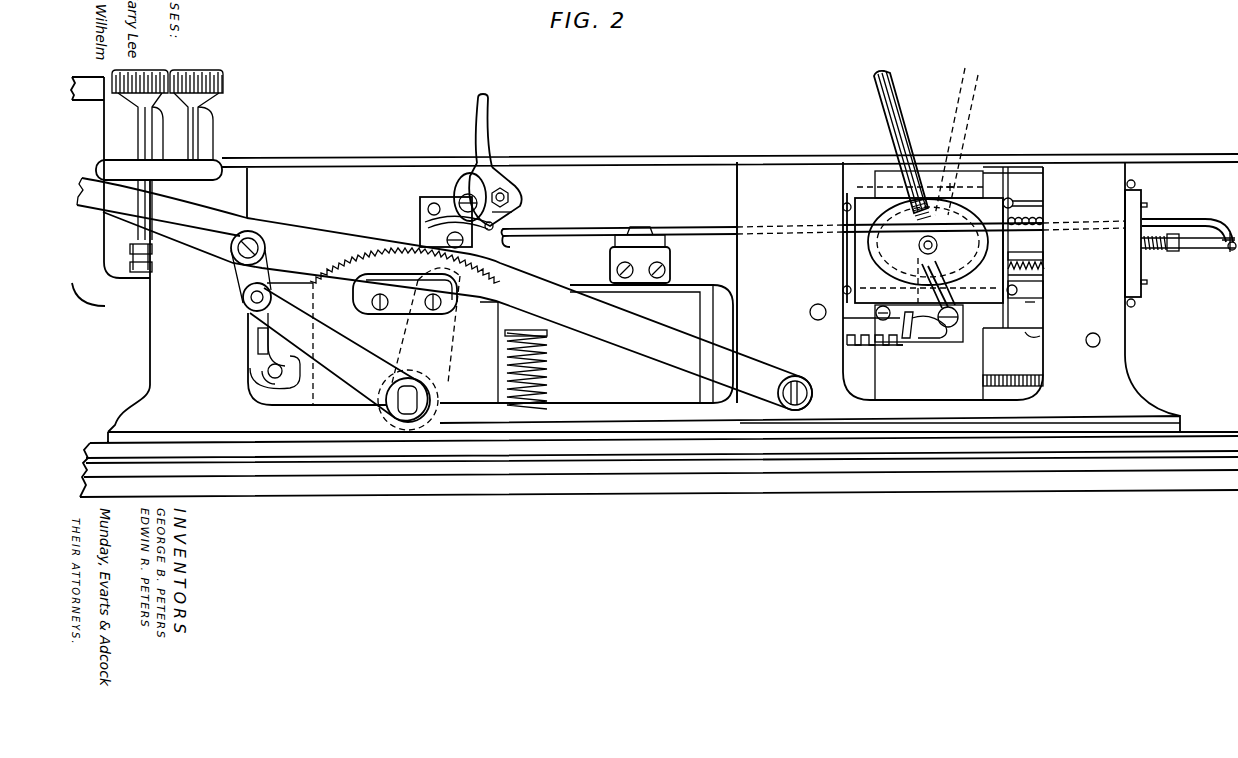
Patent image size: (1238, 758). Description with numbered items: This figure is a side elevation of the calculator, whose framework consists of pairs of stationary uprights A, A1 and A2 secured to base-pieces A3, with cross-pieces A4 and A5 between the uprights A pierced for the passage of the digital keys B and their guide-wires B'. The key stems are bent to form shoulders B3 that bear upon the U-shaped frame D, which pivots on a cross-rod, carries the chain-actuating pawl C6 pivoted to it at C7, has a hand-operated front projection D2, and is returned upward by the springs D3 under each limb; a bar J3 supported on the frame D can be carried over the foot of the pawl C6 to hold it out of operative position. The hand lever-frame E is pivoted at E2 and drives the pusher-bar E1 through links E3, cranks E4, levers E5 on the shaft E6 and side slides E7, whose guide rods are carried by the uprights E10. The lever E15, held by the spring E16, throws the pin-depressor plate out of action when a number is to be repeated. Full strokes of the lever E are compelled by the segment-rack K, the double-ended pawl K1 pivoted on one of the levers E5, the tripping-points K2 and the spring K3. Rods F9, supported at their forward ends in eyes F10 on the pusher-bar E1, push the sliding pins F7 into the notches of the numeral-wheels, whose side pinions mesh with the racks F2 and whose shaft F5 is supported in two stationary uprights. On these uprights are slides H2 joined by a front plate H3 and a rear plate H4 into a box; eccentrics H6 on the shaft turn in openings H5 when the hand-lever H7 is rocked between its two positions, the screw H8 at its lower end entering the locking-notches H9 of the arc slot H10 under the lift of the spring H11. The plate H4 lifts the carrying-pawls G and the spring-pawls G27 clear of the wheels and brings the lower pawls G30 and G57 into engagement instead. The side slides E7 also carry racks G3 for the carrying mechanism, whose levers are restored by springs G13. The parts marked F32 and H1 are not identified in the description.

The digital keys B is at (167, 141).
The guide-wires B' is at (196, 133).
The shoulders B3 is at (150, 268).
The front projection D2 is at (88, 104).
The stationary uprights A is at (254, 292).
The stationary uprights A1 is at (781, 282).
The stationary uprights A2 is at (1107, 243).
The base-pieces A3 is at (828, 430).
The cross-piece A4 is at (215, 172).
The cross-piece A5 is at (150, 252).
The hand U-shaped frame lever E is at (444, 294).
The pusher-bar E1 is at (636, 240).
The pivots E2 is at (798, 378).
The links E3 is at (250, 282).
The cranks E4 is at (339, 354).
The levers E5 is at (455, 186).
The shaft E6 is at (418, 398).
The side slides E7 is at (563, 265).
The uprights E10 is at (422, 206).
The lever E15 is at (483, 130).
The spring E16 is at (494, 175).
The bar J3 is at (260, 342).
The pawl C6 is at (290, 356).
The pivot C7 is at (268, 373).
The segment-rack K is at (405, 315).
The reversing double-ended pawl K1 is at (428, 221).
The tripping-points K2 is at (357, 263).
The spring K3 is at (500, 217).
The rods F9 is at (576, 230).
The eyes F10 is at (626, 219).
The racks F2 is at (1032, 222).
The shaft F5 is at (938, 247).
The sliding pins F7 is at (1196, 250).
The spring F32 is at (1044, 267).
The U-shaped frame D is at (586, 344).
The springs D3 is at (549, 357).
The carrying-pawls G is at (1020, 167).
The racks G3 is at (874, 355).
The springs G13 is at (1032, 374).
The spring-pawls G27 is at (1030, 205).
The carrying-pawls G30 is at (1040, 334).
The spring-pawls G57 is at (1030, 292).
The lever bracket H1 is at (950, 345).
The slide H2 is at (1000, 292).
The plate H3 is at (855, 266).
The plate H4 is at (1008, 256).
The openings H5 is at (946, 262).
The eccentrics H6 is at (928, 242).
The hand-lever H7 is at (906, 124).
The pin or screw H8 is at (951, 295).
The locking-notches H9 is at (926, 336).
The arc slot H10 is at (906, 332).
The spring H11 is at (923, 207).